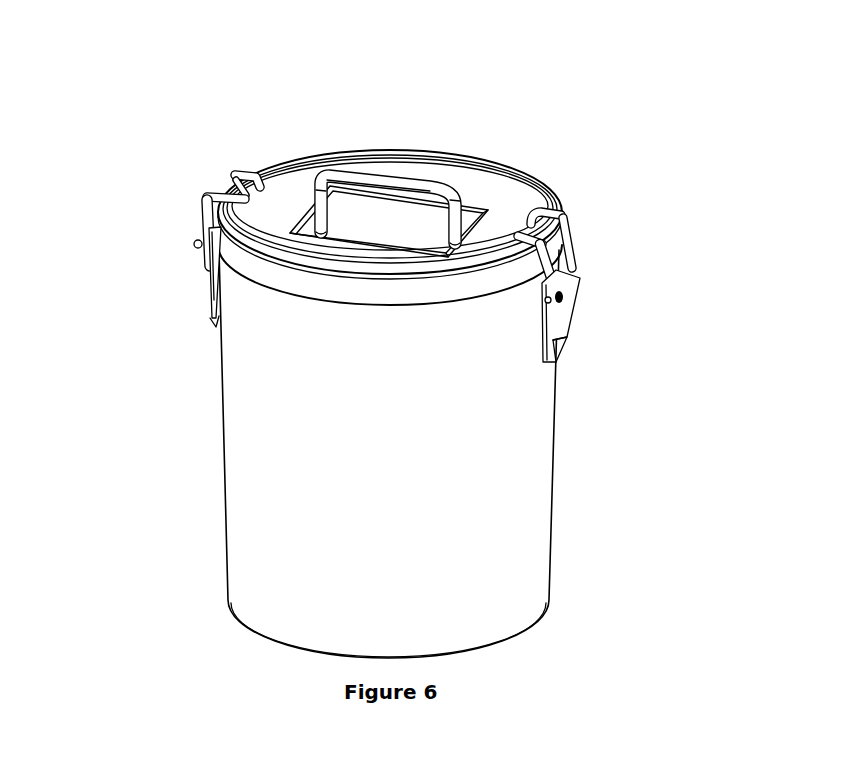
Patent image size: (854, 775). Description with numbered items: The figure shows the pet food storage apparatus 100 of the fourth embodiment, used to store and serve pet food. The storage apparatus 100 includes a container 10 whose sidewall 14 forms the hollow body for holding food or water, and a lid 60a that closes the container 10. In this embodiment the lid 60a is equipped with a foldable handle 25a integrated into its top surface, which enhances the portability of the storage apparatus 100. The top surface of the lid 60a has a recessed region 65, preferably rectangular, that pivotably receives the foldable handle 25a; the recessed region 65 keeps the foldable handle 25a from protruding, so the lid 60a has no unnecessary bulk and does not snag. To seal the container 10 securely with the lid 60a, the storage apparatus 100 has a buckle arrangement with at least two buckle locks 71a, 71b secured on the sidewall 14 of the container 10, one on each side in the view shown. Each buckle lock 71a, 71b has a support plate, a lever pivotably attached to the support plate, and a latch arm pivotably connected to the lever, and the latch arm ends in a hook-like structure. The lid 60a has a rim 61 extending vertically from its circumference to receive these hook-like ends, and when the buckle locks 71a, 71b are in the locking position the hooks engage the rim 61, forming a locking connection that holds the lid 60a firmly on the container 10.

The storage apparatus 100 is at (221, 130).
The container 10 is at (567, 411).
The sidewall 14 is at (553, 497).
The rim 61 is at (533, 178).
The recessed region 65 is at (352, 222).
The foldable handle 25a is at (413, 178).
The lid 60a is at (207, 197).
The buckle lock 71a is at (588, 247).
The buckle lock 71b is at (178, 243).